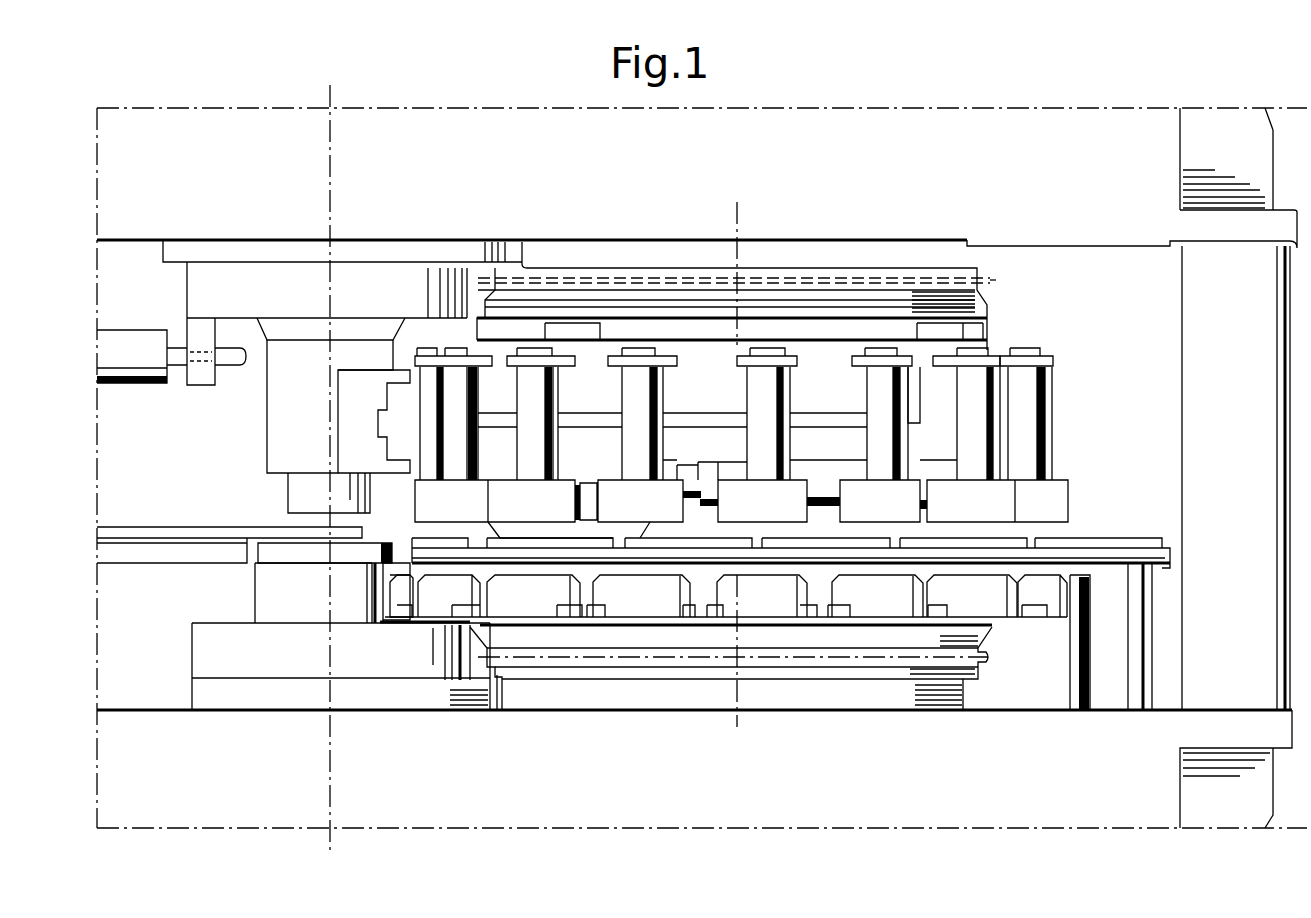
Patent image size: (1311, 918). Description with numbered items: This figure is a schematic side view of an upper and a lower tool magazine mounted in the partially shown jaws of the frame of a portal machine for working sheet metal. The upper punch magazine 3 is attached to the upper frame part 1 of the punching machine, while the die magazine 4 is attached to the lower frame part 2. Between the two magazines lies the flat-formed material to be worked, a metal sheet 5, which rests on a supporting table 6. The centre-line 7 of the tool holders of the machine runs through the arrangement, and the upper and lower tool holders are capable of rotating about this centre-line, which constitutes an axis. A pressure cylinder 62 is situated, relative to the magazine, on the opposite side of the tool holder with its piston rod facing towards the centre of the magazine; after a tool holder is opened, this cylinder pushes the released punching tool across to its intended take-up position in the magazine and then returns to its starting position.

The upper frame part 1 is at (686, 175).
The lower frame part 2 is at (714, 765).
The upper punch magazine 3 is at (706, 405).
The die magazine 4 is at (838, 640).
The metal sheet 5 is at (218, 533).
The supporting table 6 is at (1128, 560).
The centre-line of the tool holders 7 is at (330, 168).
The pressure cylinder 62 is at (117, 358).